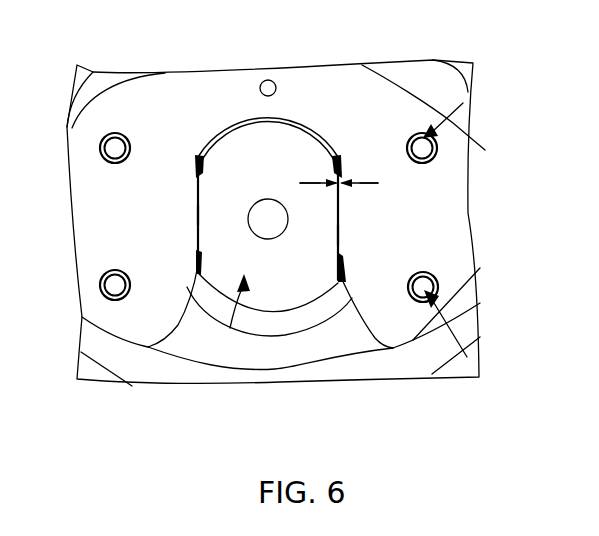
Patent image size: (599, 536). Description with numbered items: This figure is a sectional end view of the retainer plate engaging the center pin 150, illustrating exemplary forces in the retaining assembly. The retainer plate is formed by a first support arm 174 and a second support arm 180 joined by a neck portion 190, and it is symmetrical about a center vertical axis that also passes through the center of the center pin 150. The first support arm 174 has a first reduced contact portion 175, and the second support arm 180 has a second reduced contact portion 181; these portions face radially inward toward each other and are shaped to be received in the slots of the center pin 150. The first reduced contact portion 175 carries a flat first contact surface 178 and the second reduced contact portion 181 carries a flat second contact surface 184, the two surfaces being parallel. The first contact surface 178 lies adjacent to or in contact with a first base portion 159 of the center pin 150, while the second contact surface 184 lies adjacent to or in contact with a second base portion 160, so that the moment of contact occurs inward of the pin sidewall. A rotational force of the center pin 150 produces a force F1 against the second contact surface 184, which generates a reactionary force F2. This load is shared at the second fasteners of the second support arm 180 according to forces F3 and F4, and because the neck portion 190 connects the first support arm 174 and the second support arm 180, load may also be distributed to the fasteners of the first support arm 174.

The neck portion 190 is at (347, 79).
The first support arm 174 is at (110, 200).
The second support arm 180 is at (471, 210).
The first base portion 159 is at (197, 173).
The first reduced contact portion 175 is at (198, 213).
The first contact surface 178 is at (196, 246).
The second reduced contact portion 181 is at (343, 233).
The second contact surface 184 is at (345, 270).
The center pin 150 is at (270, 321).
The second base portion 160 is at (340, 167).
The force F1 is at (318, 185).
The reactionary force F2 is at (377, 187).
The force F3 is at (485, 150).
The force F4 is at (480, 270).